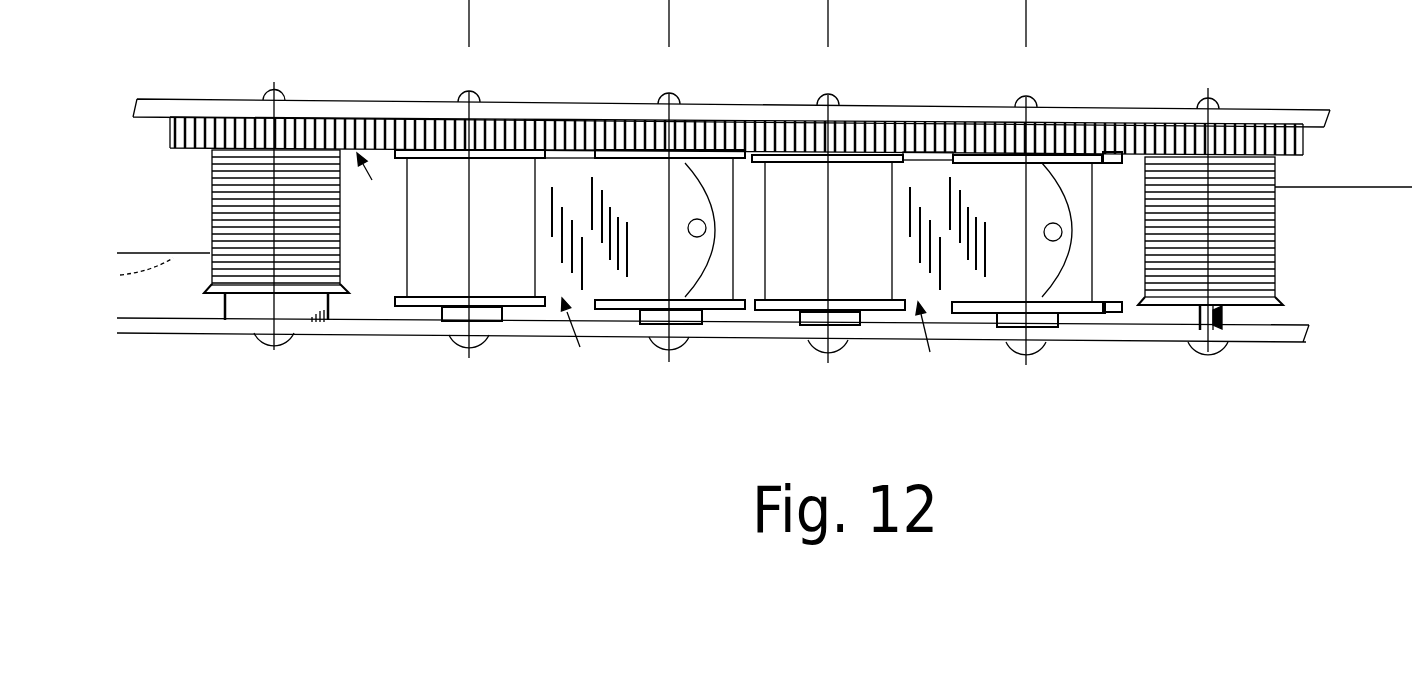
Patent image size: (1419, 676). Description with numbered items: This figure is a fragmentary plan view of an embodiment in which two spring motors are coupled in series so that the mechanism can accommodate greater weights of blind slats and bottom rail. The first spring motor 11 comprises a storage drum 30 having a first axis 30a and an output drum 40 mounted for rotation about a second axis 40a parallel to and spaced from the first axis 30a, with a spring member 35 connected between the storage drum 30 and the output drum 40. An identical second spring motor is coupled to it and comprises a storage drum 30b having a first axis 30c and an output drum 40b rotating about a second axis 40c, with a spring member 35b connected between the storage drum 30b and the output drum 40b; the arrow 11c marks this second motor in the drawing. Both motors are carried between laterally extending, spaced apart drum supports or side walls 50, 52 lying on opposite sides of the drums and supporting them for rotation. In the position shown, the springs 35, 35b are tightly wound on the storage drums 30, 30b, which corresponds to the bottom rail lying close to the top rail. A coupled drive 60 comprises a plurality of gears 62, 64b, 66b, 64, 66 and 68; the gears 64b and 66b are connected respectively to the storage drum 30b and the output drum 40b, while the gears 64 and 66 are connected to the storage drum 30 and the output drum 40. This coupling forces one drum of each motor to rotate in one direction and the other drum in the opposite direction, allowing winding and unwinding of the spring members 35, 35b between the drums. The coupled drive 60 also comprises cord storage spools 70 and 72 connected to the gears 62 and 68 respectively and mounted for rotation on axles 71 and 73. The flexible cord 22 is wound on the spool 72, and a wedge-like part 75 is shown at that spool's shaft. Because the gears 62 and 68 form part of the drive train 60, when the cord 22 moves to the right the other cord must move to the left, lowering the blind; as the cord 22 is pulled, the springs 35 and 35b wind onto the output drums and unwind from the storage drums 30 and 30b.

The spring motor 11 is at (934, 337).
The light path direction 11c is at (584, 345).
The flexible member or cord 22 is at (1333, 187).
The storage drum 30 is at (793, 203).
The first axis 30a is at (822, 352).
The storage drum 30b is at (430, 190).
The first axis 30c is at (458, 345).
The spring member 35 is at (916, 178).
The spring member 35b is at (558, 178).
The output drum 40 is at (1077, 190).
The second axis 40a is at (1020, 353).
The output drum 40b is at (717, 178).
The second axis 40c is at (676, 356).
The drum support or side wall 50 is at (1110, 108).
The drum support or side wall 52 is at (1238, 332).
The coupled drive 60 is at (373, 187).
The gear 62 is at (290, 128).
The gear 64 is at (858, 135).
The gear 64b is at (497, 118).
The gear 66 is at (977, 118).
The gear 66b is at (630, 113).
The gear 68 is at (1225, 137).
The cord storage spool 70 is at (205, 212).
The axle 71 is at (264, 345).
The cord storage spool 72 is at (1288, 241).
The axle 73 is at (1197, 315).
The wedge clip 75 is at (1260, 313).